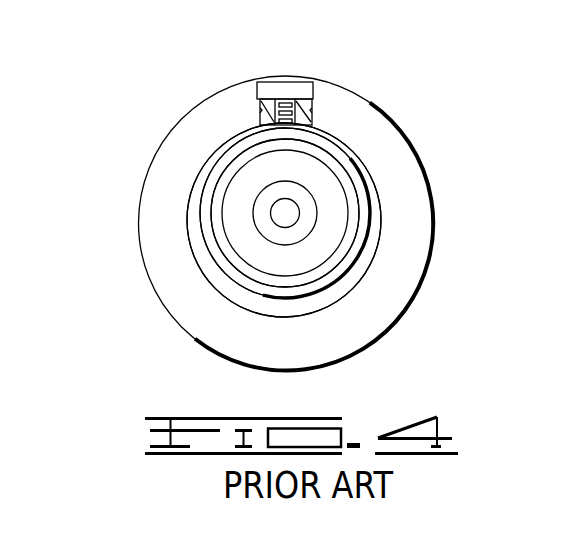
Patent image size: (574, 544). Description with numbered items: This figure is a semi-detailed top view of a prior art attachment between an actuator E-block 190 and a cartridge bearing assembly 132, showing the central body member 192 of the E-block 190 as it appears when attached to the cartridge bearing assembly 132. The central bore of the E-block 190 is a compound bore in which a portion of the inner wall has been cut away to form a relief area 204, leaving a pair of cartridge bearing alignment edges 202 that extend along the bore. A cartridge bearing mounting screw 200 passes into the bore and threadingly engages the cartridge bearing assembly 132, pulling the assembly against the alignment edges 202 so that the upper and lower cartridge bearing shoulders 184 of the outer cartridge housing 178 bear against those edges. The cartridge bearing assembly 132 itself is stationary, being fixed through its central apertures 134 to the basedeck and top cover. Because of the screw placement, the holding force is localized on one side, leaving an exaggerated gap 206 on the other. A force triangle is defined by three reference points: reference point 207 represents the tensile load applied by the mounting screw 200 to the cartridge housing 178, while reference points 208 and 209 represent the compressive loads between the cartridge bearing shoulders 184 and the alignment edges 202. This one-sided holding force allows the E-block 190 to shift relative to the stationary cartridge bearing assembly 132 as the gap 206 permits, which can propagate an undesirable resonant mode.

The E-block 190 is at (192, 121).
The central body member 192 is at (338, 336).
The gap 206 is at (255, 312).
The reference point 209 is at (218, 172).
The relief area 204 is at (323, 121).
The reference point 208 is at (358, 180).
The outer cartridge housing 178 is at (365, 258).
The cartridge bearing alignment edges 202 is at (356, 179).
The cartridge bearing shoulders 184 is at (333, 277).
The cartridge bearing assembly 132 is at (224, 262).
The central apertures 134 is at (290, 213).
The cartridge bearing mounting screws 200 is at (286, 82).
The reference point 207 is at (283, 99).